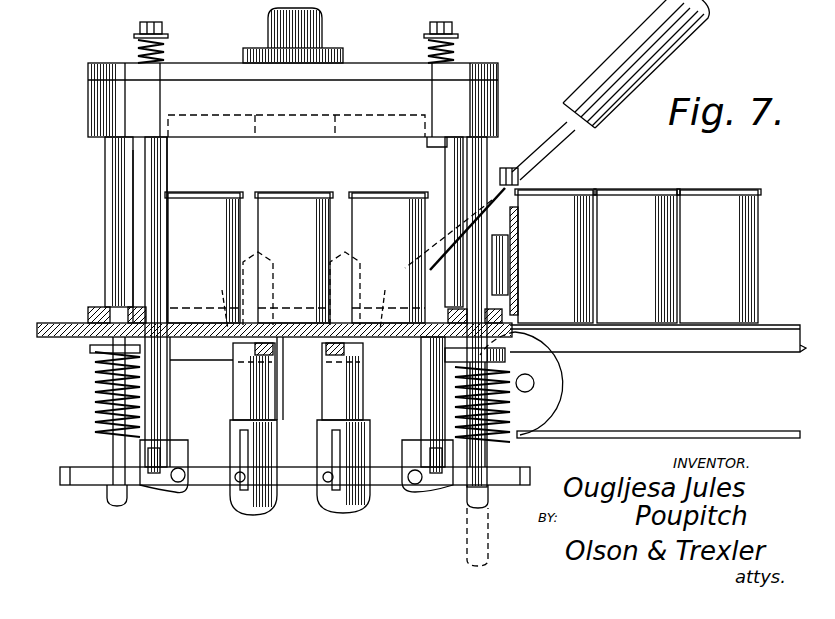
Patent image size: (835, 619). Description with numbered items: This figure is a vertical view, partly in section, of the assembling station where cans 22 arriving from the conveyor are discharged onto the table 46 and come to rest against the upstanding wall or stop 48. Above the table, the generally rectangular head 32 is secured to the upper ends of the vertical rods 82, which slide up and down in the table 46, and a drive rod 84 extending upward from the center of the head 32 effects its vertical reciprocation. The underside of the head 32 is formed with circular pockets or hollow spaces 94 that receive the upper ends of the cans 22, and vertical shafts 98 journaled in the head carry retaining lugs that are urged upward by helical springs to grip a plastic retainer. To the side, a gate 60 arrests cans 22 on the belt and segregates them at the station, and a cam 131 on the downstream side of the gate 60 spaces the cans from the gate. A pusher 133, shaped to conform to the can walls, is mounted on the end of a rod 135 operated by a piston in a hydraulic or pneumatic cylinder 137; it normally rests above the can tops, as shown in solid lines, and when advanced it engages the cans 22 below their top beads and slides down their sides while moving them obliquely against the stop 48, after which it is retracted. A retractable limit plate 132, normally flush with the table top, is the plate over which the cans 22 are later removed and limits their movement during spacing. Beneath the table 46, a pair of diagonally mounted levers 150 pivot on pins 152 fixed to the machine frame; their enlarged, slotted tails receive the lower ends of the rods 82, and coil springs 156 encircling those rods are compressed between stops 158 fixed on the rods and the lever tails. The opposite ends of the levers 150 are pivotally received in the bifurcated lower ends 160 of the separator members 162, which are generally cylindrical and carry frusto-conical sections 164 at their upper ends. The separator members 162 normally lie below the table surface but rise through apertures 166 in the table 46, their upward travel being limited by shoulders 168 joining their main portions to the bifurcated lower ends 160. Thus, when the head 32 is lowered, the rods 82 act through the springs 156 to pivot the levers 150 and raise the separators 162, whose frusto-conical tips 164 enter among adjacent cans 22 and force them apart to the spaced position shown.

The can 22 is at (360, 192).
The head 32 is at (185, 62).
The table 46 is at (58, 340).
The upstanding wall or stop 48 is at (162, 238).
The gate 60 is at (520, 220).
The vertical rods 82 is at (112, 163).
The drive rod 84 is at (323, 28).
The pockets or hollow spaces 94 is at (300, 116).
The vertical shafts 98 is at (138, 38).
The cam 131 is at (498, 278).
The retractable limit plate 132 is at (297, 387).
The pusher 133 is at (500, 174).
The rod 135 is at (565, 128).
The hydraulic or pneumatic cylinder 137 is at (690, 23).
The levers 150 is at (215, 467).
The pins 152 is at (175, 490).
The coil springs 156 is at (100, 428).
The stops 158 is at (515, 369).
The bifurcated lower ends 160 is at (250, 505).
The separator members 162 is at (237, 378).
The frusto-conical sections 164 is at (325, 333).
The apertures 166 is at (392, 320).
The shoulders 168 is at (330, 420).